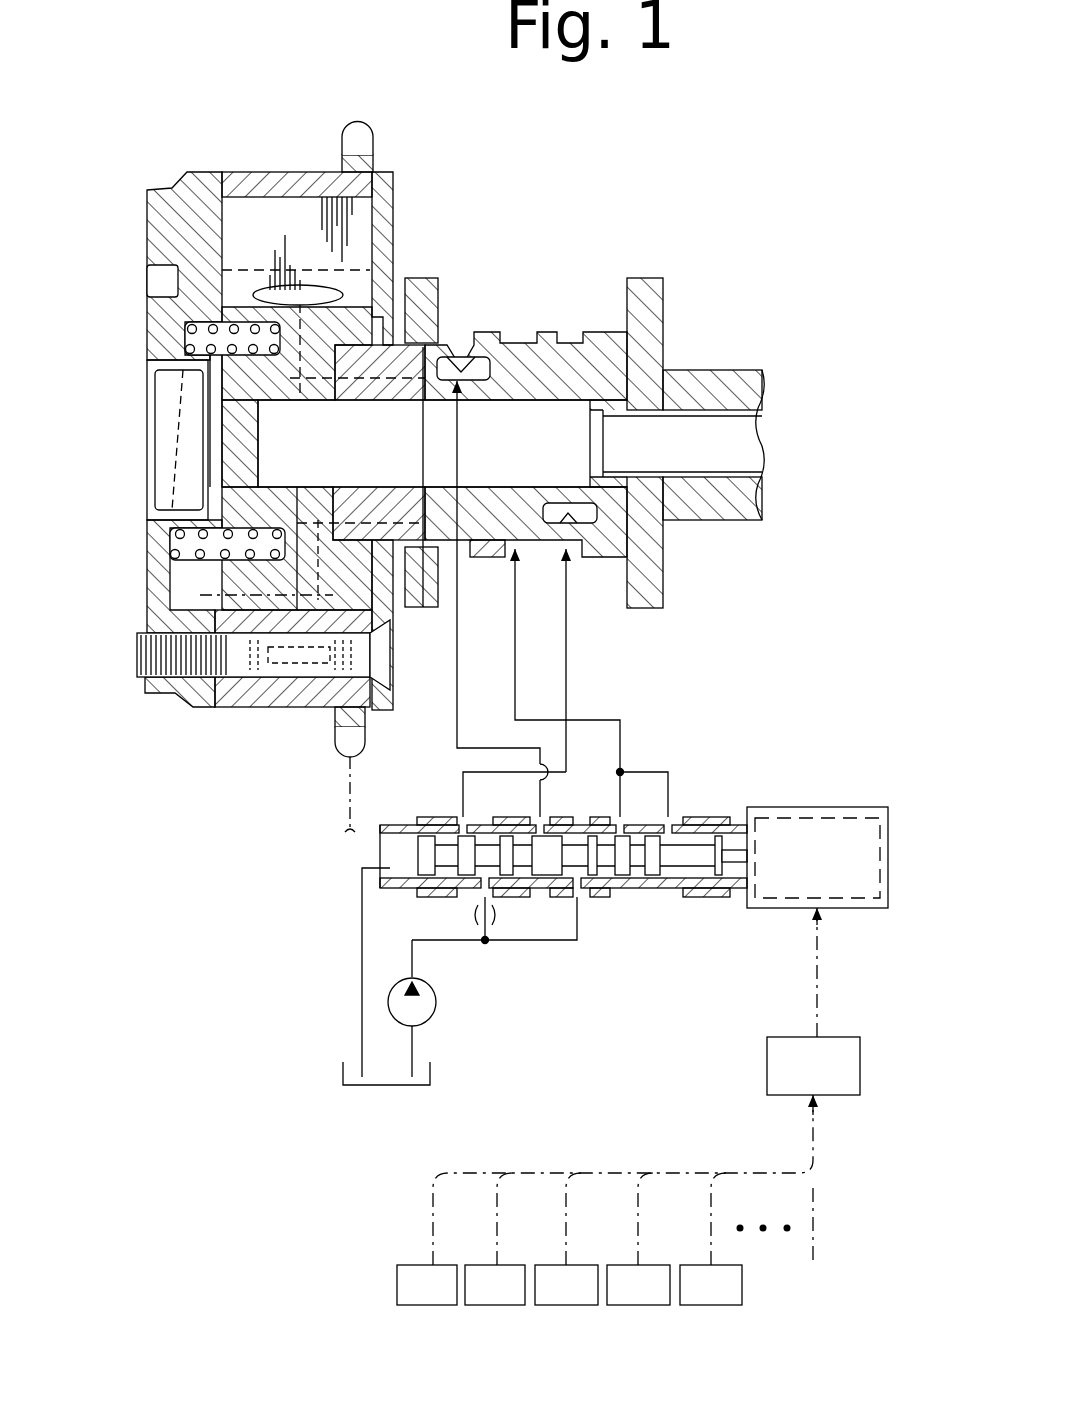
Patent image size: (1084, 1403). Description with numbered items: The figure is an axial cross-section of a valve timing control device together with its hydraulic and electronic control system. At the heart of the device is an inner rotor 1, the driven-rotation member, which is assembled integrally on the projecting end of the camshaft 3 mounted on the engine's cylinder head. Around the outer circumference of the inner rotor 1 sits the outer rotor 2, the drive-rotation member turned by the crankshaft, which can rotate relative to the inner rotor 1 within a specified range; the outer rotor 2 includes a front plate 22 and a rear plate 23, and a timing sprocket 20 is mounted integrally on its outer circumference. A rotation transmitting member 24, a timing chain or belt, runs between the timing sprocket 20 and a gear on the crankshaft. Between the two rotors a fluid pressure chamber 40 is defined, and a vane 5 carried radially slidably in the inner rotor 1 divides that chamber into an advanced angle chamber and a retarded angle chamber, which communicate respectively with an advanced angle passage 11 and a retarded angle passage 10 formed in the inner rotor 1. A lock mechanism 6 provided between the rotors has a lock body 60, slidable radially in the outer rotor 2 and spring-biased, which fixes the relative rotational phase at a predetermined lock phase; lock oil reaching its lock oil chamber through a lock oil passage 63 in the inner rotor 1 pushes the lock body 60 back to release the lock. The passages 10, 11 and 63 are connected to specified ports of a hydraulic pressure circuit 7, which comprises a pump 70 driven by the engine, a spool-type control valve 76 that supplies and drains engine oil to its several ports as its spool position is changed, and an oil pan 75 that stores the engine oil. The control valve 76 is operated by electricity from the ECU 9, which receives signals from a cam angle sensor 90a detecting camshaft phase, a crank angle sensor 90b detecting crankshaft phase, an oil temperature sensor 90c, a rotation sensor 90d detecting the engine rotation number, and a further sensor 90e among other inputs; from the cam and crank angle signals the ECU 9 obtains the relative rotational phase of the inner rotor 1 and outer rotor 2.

The inner rotor 1 is at (215, 580).
The outer rotor 2 is at (192, 713).
The camshaft 3 is at (706, 370).
The vane 5 is at (352, 233).
The lock mechanism 6 is at (254, 657).
The hydraulic pressure circuit 7 is at (642, 720).
The ECU 9 is at (767, 1068).
The retarded angle passage 10 is at (461, 345).
The advanced angle passage 11 is at (545, 407).
The timing sprocket 20 is at (370, 133).
The front plate 22 is at (164, 212).
The rear plate 23 is at (397, 196).
The rotation transmitting member 24 is at (348, 815).
The fluid pressure chamber 40 is at (299, 208).
The lock body 60 is at (357, 653).
The lock oil passage 63 is at (478, 553).
The pump 70 is at (437, 1002).
The oil pan 75 is at (343, 1072).
The control valve 76 is at (642, 898).
The cam angle sensor 90a is at (427, 1285).
The crank angle sensor 90b is at (495, 1285).
The oil temperature sensor 90c is at (566, 1285).
The rotation sensor 90d is at (638, 1285).
The sensor 90e is at (711, 1285).